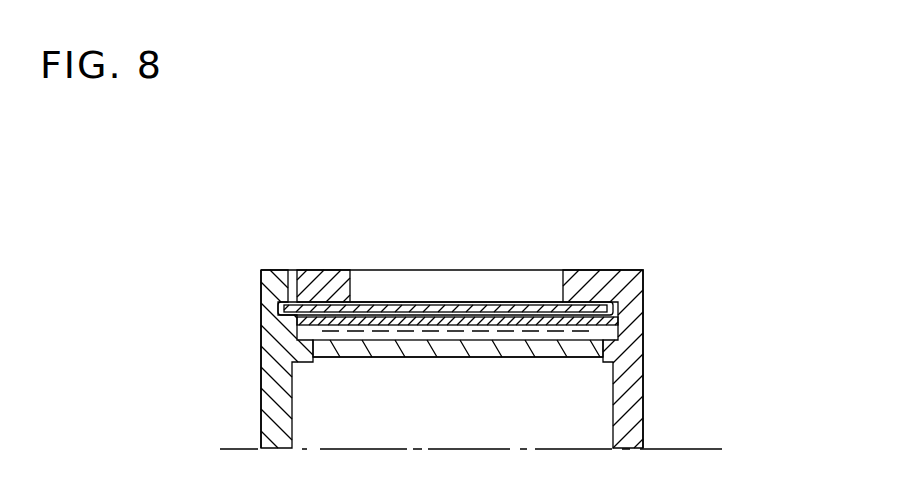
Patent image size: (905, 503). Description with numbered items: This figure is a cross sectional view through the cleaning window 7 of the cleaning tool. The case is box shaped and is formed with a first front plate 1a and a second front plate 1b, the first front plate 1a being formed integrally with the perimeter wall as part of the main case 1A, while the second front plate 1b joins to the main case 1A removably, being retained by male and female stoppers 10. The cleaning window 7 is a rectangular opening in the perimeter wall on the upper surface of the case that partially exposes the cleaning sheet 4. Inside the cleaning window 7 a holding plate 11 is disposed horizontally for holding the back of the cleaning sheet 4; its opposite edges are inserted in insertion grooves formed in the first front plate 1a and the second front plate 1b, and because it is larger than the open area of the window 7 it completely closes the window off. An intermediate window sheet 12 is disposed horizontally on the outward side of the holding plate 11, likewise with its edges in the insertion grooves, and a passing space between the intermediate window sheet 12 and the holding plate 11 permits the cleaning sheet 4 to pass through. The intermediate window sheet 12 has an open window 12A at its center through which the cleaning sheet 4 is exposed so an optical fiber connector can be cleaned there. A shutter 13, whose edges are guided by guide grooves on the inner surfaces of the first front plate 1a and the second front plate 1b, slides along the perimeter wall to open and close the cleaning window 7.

The main case 1A is at (675, 306).
The first front plate 1a is at (634, 420).
The second front plate 1b is at (273, 390).
The stoppers 10 is at (609, 285).
The cleaning window 7 is at (411, 256).
The intermediate window sheet 12 is at (343, 303).
The shutter 13 is at (527, 312).
The open window 12A is at (438, 333).
The cleaning sheet 4 is at (550, 355).
The holding plate 11 is at (360, 357).